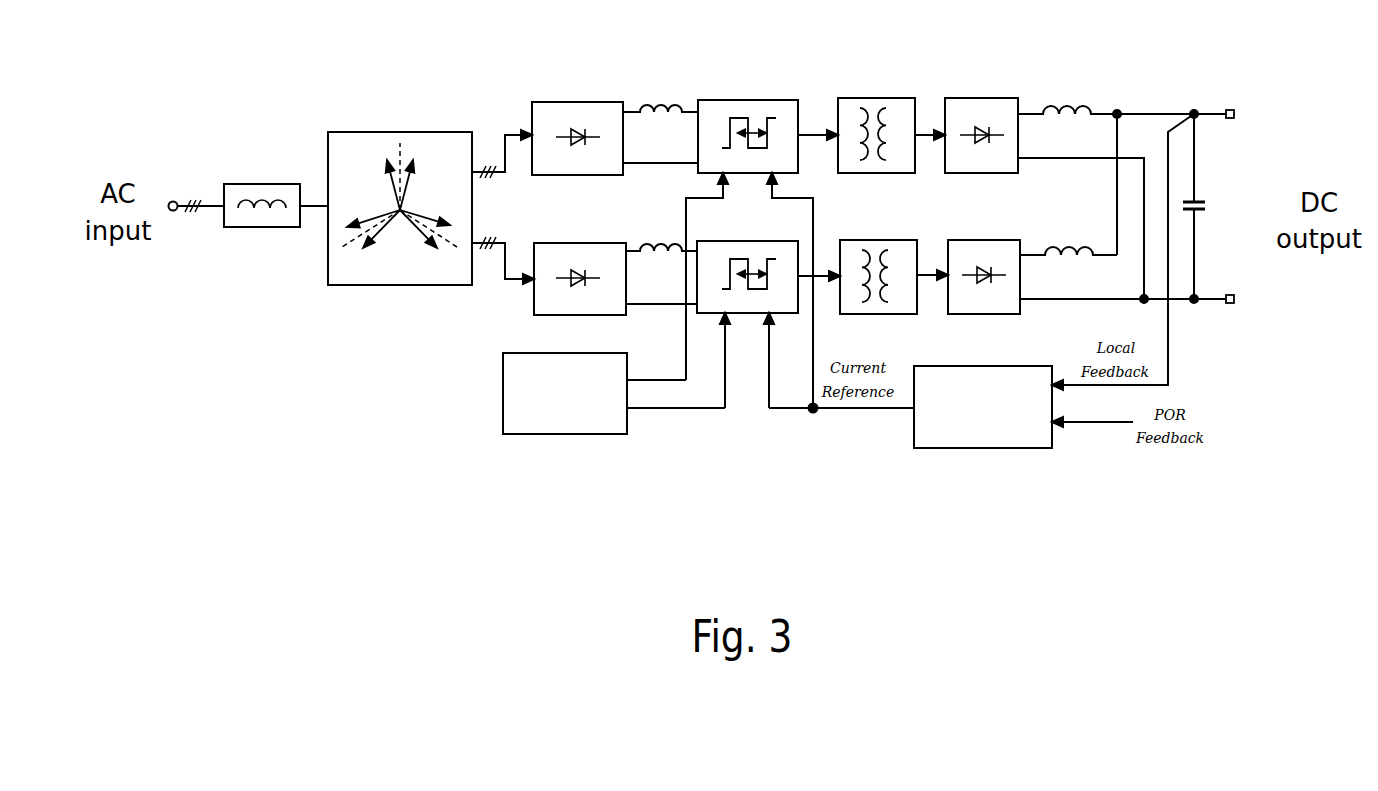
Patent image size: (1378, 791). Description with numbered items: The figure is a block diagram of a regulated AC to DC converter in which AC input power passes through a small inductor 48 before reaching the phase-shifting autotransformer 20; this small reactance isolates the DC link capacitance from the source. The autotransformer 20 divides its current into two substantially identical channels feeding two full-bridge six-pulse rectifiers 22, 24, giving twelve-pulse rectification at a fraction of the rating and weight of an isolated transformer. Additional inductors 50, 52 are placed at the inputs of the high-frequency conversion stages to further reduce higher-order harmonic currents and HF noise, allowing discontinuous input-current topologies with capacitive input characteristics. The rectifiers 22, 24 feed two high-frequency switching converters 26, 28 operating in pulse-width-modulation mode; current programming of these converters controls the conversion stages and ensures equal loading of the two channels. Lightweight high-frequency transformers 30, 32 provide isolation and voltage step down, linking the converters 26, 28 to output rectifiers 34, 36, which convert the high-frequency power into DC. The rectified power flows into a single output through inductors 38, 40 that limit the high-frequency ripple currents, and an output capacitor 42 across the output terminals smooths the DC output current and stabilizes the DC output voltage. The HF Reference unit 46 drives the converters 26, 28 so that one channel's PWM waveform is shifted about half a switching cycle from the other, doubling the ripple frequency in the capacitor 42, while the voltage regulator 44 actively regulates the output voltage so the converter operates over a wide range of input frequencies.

The phase-shifting autotransformer 20 is at (400, 132).
The full-bridge 6-pulse rectifier 22 is at (575, 102).
The full-bridge 6-pulse rectifier 24 is at (572, 243).
The high-frequency switching converter 26 is at (748, 100).
The high-frequency switching converter 28 is at (798, 318).
The transformer 30 is at (870, 98).
The transformer 32 is at (863, 240).
The output rectifier 34 is at (975, 98).
The output rectifier 36 is at (969, 240).
The inductor 38 is at (1058, 105).
The inductor 40 is at (1060, 247).
The output capacitor 42 is at (1200, 201).
The voltage regulator 44 is at (990, 448).
The High Frequency (HF) Reference unit 46 is at (568, 434).
The inductor 48 is at (252, 184).
The inductor 50 is at (655, 102).
The inductor 52 is at (655, 243).